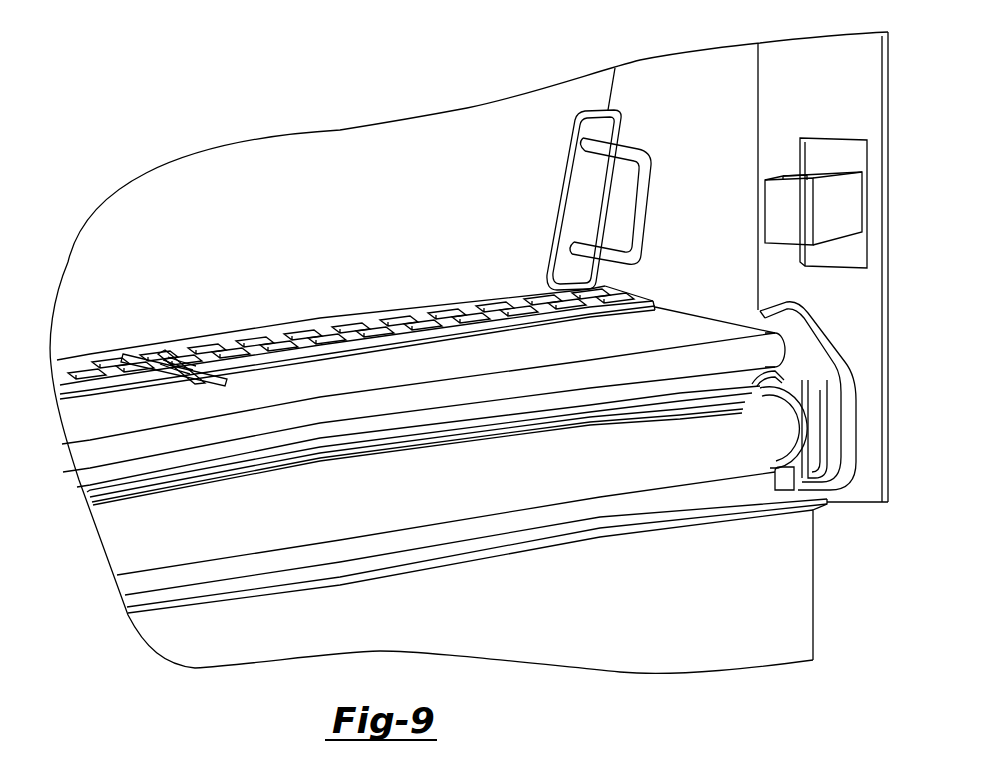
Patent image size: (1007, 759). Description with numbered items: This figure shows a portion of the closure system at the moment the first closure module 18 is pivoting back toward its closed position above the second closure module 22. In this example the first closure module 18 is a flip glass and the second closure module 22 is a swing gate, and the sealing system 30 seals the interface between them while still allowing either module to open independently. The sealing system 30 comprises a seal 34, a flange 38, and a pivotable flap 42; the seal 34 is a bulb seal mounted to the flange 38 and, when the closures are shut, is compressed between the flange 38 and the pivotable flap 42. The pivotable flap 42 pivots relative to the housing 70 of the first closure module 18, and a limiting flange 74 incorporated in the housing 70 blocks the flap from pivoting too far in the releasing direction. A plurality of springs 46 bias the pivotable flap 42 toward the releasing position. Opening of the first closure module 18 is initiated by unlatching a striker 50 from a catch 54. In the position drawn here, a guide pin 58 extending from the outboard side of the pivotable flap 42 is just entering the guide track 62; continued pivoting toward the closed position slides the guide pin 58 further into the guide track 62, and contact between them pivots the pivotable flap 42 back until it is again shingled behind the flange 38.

The first closure module 18 is at (384, 173).
The second closure module 22 is at (772, 592).
The sealing system 30 is at (153, 533).
The seal 34 is at (613, 467).
The flange 38 is at (713, 390).
The pivotable flap 42 is at (680, 327).
The springs 46 is at (174, 356).
The striker 50 is at (637, 203).
The catch 54 is at (835, 212).
The guide pin 58 is at (785, 348).
The guide track 62 is at (843, 442).
The housing 70 is at (455, 310).
The limiting flange 74 is at (322, 356).